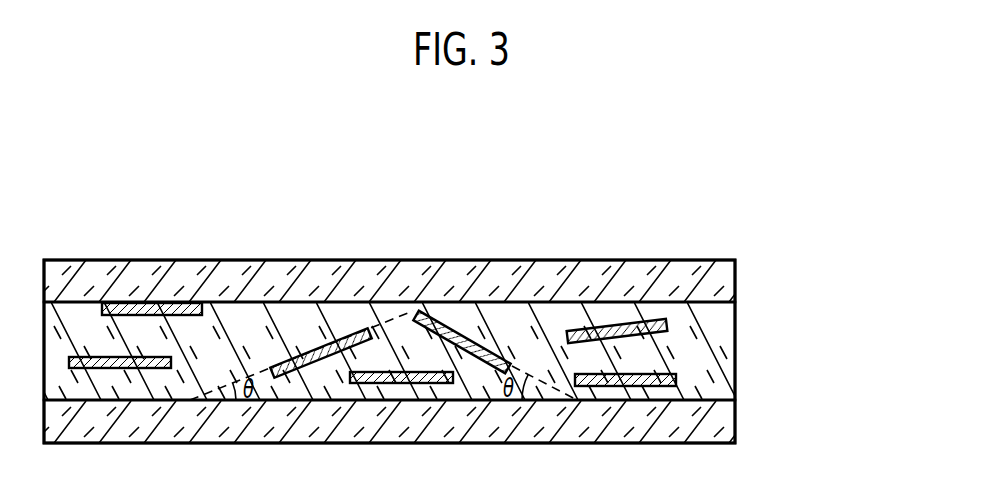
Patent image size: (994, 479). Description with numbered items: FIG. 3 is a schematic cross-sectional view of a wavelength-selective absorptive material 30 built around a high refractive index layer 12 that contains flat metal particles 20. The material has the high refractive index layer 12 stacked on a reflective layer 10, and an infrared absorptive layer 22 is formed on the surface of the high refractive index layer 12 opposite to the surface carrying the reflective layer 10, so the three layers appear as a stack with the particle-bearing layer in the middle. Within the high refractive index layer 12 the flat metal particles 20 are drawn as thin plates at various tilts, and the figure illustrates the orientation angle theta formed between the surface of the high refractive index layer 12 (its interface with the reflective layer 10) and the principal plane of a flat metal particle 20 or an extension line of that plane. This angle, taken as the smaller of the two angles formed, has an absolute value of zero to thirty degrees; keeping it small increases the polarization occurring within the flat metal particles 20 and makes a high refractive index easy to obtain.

The wavelength-selective absorptive material 30 is at (703, 228).
The infrared absorptive layer 22 is at (737, 283).
The high refractive index layer 12 is at (750, 377).
The reflective layer 10 is at (737, 425).
The flat metal particles 20 is at (640, 345).